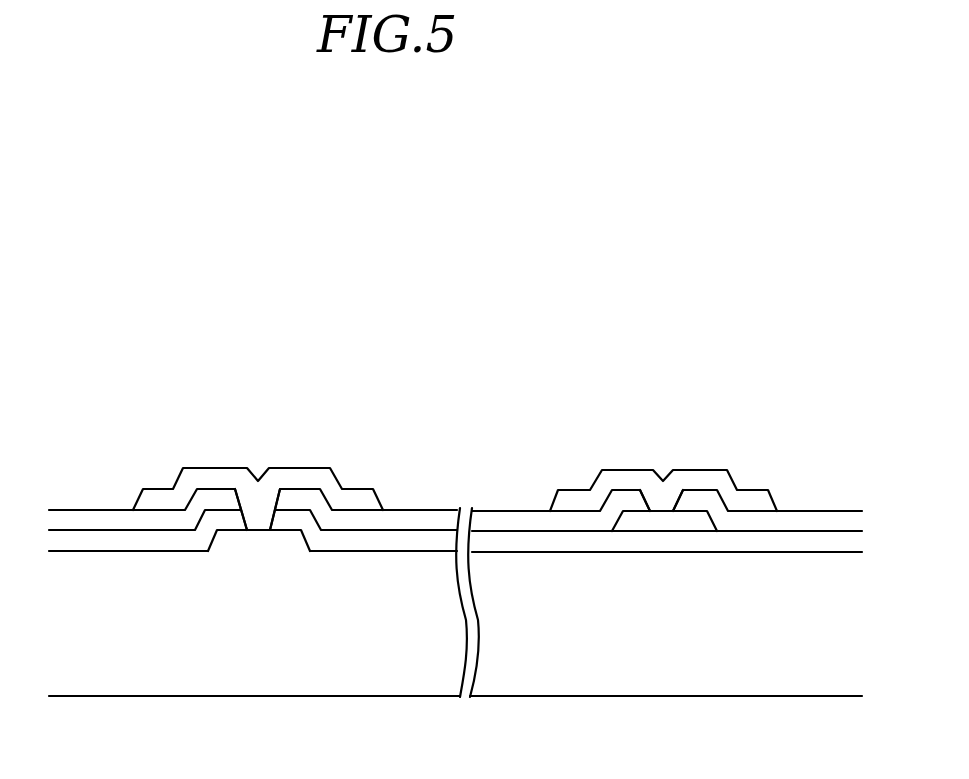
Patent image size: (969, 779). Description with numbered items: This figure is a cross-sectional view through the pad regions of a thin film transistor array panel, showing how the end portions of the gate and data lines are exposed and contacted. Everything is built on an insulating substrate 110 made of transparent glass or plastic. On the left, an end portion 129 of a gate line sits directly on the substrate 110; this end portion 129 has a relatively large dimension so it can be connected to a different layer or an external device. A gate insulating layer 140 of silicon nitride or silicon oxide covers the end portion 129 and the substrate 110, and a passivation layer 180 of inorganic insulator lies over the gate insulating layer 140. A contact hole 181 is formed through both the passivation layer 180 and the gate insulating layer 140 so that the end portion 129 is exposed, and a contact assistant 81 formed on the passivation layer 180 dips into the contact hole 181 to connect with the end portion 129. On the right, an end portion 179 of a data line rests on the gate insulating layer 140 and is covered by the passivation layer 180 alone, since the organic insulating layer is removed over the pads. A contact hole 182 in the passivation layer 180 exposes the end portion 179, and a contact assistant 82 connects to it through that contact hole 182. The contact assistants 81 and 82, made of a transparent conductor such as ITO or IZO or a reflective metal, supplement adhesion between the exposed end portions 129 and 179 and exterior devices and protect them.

The insulating substrate 110 is at (193, 672).
The end portion of gate line 129 is at (260, 540).
The gate insulating layer 140 is at (149, 538).
The end portion of data line 179 is at (665, 515).
The passivation layer 180 is at (362, 522).
The contact assistant 81 is at (208, 478).
The contact assistant 82 is at (708, 480).
The contact hole 181 is at (261, 466).
The contact hole 182 is at (663, 464).